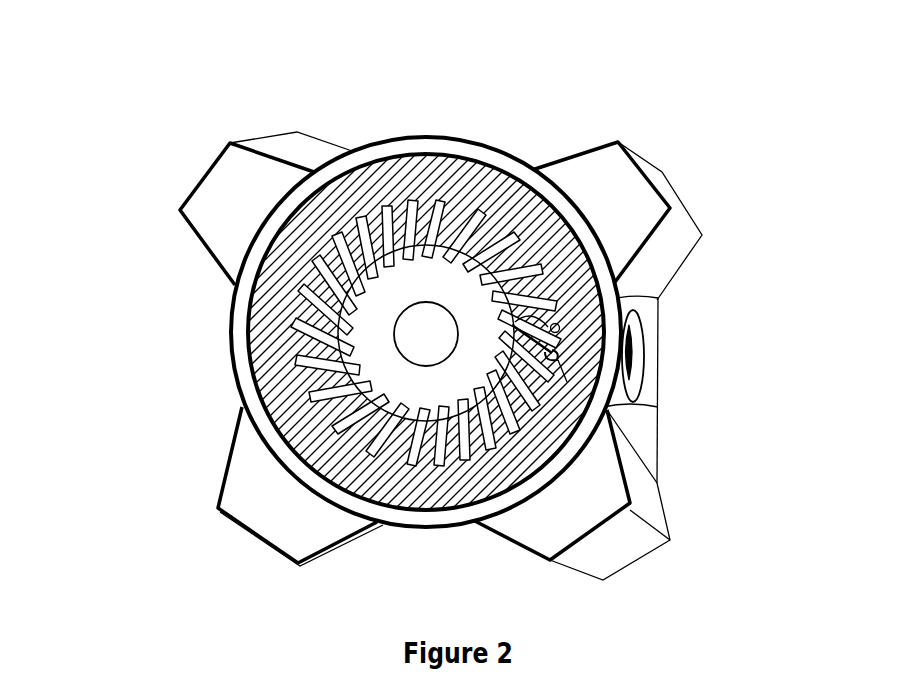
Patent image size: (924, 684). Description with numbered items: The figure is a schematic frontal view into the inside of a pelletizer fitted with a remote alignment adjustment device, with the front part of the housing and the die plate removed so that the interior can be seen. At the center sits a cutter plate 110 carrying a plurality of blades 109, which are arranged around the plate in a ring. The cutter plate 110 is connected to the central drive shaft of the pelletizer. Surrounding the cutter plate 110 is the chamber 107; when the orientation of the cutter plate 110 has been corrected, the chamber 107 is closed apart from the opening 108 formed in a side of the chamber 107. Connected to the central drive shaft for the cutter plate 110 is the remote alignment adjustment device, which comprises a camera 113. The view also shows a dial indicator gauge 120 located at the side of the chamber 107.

The chamber 107 is at (512, 200).
The opening 108 is at (633, 360).
The blades 109 is at (317, 325).
The cutter plate 110 is at (452, 265).
The camera 113 is at (555, 328).
The dial indicator gauge 120 is at (607, 407).